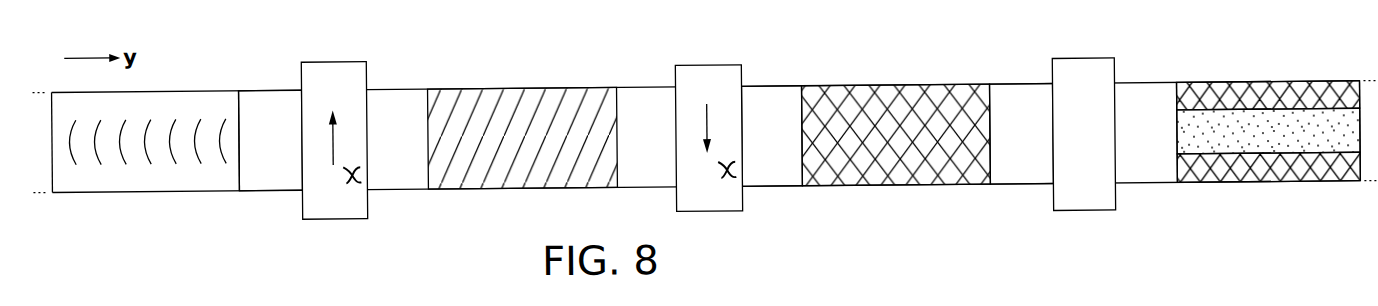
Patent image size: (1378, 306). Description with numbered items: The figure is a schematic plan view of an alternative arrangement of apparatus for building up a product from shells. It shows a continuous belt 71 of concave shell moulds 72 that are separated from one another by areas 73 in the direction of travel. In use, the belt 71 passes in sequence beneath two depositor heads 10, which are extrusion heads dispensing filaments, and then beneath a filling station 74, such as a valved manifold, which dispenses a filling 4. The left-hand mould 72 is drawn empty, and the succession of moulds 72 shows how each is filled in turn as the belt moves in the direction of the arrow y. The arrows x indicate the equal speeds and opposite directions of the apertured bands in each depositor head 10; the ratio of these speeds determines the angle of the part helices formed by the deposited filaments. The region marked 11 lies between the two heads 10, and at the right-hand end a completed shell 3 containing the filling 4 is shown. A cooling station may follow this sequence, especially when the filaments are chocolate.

The continuous belt 71 is at (178, 94).
The concave shell mould 72 is at (130, 181).
The area 73 is at (275, 182).
The depositor head 10 is at (340, 64).
The hatched recorded region 11 is at (555, 98).
The filling station 74 is at (1083, 68).
The filling 4 is at (1177, 143).
The shell 3 is at (1240, 158).